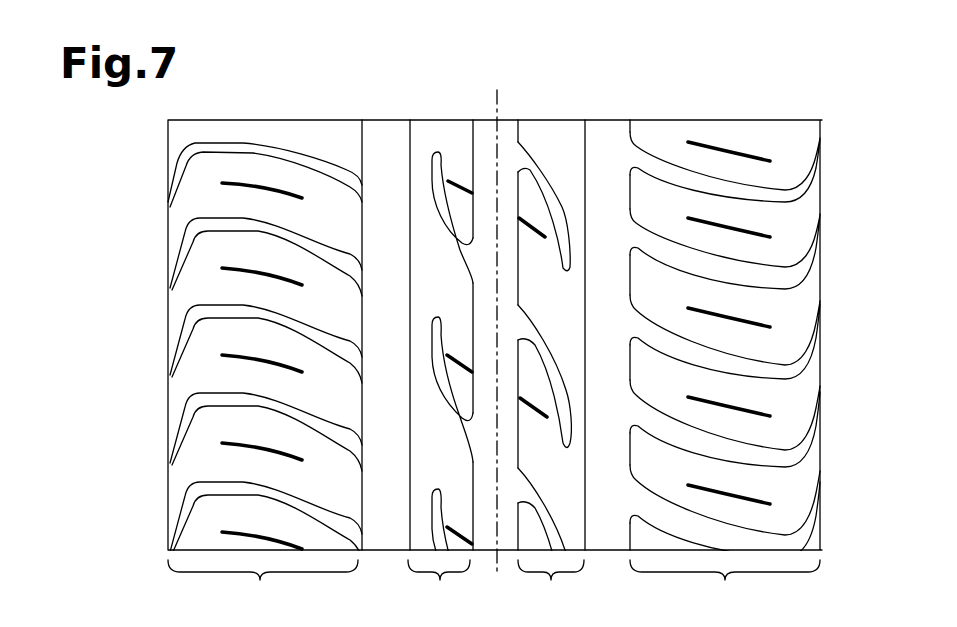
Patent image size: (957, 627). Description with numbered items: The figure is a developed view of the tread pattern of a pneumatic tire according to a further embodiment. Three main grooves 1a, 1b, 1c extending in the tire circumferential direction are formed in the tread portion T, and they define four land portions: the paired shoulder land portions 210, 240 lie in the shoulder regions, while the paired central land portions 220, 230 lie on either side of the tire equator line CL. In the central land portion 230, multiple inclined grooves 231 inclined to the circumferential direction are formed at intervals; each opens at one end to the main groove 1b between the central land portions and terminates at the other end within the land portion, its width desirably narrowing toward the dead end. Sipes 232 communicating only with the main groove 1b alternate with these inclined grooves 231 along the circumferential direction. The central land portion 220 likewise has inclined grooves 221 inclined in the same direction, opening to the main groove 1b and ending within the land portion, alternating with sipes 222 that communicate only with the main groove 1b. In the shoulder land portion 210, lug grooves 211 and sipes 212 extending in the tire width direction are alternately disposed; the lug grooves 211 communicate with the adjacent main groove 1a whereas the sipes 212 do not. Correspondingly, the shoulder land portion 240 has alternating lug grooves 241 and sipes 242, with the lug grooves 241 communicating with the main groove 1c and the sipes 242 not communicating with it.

The tread portion T is at (798, 118).
The tire equator line CL is at (497, 315).
The main groove 1a is at (383, 130).
The main groove 1b is at (487, 128).
The main groove 1c is at (615, 130).
The shoulder land portion 210 is at (265, 337).
The lug groove 211 is at (229, 143).
The sipe 212 is at (300, 193).
The central land portion 220 is at (440, 325).
The inclined groove 221 is at (437, 151).
The sipe 222 is at (463, 188).
The central land portion 230 is at (553, 317).
The inclined groove 231 is at (522, 165).
The sipe 232 is at (538, 225).
The shoulder land portion 240 is at (725, 337).
The lug groove 241 is at (667, 167).
The sipe 242 is at (745, 153).